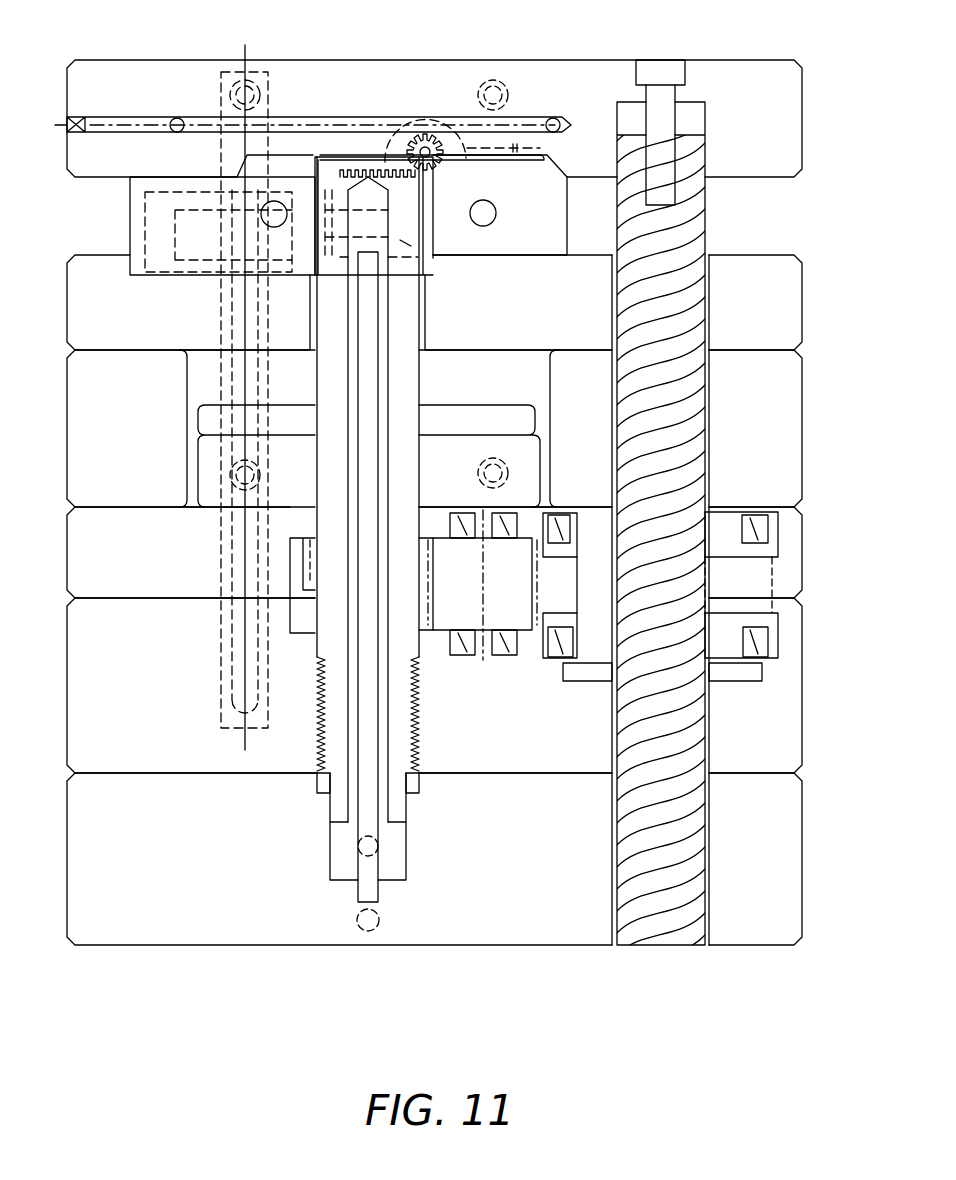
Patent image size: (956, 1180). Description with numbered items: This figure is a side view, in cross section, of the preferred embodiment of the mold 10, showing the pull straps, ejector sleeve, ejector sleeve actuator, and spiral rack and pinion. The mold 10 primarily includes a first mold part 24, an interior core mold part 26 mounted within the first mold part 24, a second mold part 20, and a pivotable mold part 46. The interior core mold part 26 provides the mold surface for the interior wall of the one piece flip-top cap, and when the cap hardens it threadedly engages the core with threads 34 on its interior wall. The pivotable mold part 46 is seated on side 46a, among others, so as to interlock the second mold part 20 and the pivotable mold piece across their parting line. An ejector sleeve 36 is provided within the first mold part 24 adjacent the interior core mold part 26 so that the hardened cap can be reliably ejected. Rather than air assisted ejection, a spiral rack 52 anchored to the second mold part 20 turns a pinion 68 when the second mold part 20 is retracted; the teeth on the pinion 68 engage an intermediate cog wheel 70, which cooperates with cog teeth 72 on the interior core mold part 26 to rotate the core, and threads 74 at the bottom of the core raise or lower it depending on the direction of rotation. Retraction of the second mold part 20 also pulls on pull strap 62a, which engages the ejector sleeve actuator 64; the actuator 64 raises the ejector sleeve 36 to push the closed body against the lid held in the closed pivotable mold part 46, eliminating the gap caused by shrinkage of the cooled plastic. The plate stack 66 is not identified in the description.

The mold 10 is at (808, 409).
The second mold part 20 is at (722, 60).
The first mold part 24 is at (130, 224).
The interior core mold part 26 is at (405, 329).
The threads 34 is at (323, 177).
The ejector sleeve 36 is at (427, 383).
The pivotable mold part 46 is at (567, 216).
The side of pivotable mold part 46a is at (567, 157).
The spiral rack 52 is at (715, 862).
The pull strap 62a is at (222, 663).
The ejector sleeve actuator 64 is at (210, 483).
The plate 66 is at (67, 296).
The pinion 68 is at (760, 577).
The intermediate cog wheel 70 is at (495, 610).
The cog teeth 72 is at (320, 560).
The threads 74 is at (322, 713).